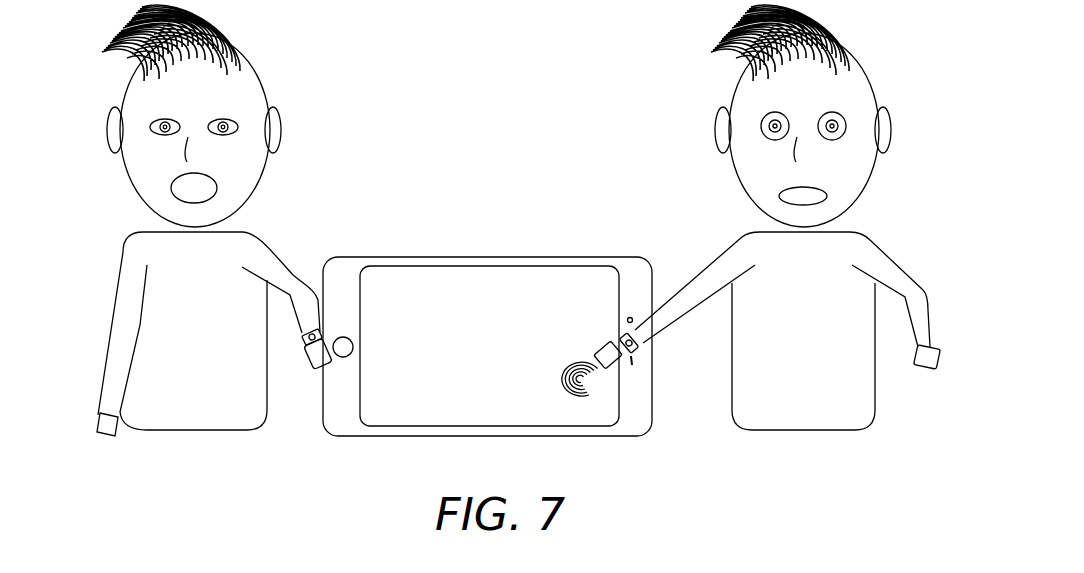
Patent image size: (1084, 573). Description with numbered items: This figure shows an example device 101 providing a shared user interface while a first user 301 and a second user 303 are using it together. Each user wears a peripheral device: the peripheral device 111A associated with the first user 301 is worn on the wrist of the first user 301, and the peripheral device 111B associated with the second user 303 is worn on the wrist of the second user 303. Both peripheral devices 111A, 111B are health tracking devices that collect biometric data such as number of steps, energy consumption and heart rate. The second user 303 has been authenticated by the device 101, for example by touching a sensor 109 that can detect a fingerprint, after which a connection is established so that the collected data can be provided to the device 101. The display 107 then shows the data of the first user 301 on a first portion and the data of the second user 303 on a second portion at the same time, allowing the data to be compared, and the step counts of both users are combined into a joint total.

The device 101 is at (487, 344).
The display 107 is at (390, 415).
The sensor 109 is at (587, 395).
The peripheral device 111A is at (302, 333).
The peripheral device 111B is at (640, 342).
The first user 301 is at (122, 83).
The second user 303 is at (875, 85).